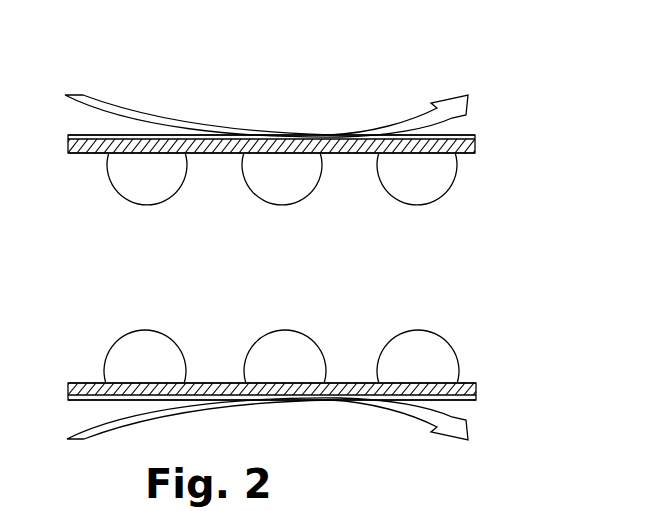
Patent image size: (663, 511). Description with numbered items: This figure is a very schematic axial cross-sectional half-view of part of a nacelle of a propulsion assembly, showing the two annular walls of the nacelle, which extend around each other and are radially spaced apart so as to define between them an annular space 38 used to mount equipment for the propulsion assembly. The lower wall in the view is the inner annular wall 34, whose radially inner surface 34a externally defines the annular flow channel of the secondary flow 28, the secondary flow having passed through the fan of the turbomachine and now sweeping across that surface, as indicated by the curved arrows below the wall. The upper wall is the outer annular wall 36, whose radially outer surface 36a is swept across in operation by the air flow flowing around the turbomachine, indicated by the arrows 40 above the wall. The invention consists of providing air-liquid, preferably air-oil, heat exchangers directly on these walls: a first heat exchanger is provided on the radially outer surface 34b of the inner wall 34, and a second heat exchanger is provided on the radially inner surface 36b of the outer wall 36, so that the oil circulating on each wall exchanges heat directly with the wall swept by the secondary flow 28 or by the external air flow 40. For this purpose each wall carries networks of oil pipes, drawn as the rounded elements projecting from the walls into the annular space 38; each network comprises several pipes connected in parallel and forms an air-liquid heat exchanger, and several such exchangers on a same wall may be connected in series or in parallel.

The secondary flow 28 is at (90, 423).
The inner annular wall 34 is at (88, 383).
The radially inner surface of the inner wall 34a is at (468, 400).
The radially outer surface of the inner wall 34b is at (472, 382).
The outer annular wall 36 is at (79, 153).
The radially outer surface of the outer wall 36a is at (466, 136).
The radially inner surface of the outer wall 36b is at (470, 153).
The annular space 38 is at (123, 269).
The air flow 40 is at (90, 106).